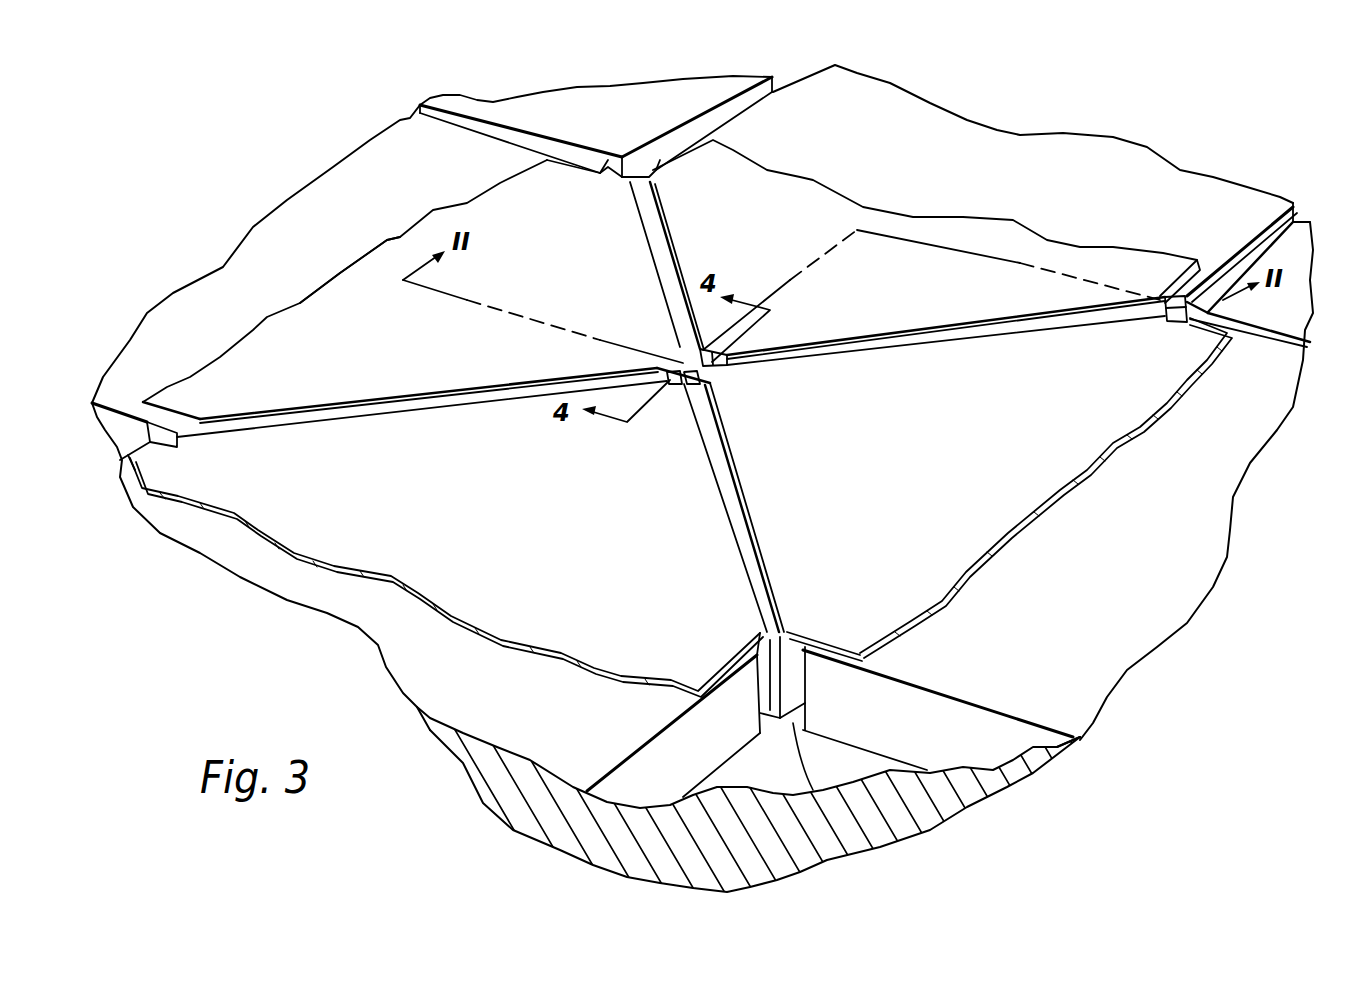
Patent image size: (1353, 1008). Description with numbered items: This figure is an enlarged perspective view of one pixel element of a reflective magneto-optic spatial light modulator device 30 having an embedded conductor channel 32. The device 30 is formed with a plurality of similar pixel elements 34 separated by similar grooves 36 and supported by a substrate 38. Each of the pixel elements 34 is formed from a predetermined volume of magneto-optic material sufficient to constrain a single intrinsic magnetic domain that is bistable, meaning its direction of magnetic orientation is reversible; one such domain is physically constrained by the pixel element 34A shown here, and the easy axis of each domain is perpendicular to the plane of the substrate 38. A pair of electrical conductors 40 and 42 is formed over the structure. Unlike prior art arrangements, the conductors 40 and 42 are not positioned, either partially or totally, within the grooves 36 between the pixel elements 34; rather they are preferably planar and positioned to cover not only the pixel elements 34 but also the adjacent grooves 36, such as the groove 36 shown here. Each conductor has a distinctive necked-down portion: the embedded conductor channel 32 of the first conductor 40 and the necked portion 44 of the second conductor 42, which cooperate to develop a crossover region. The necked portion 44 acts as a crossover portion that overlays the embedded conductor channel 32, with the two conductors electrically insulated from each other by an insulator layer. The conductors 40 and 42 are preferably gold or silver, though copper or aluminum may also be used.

The magneto-optic spatial light modulator device 30 is at (1238, 108).
The embedded conductor channel 32 is at (683, 392).
The pixel elements 34 is at (290, 215).
The pixel element 34A is at (768, 693).
The grooves 36 is at (870, 842).
The substrate 38 is at (970, 793).
The first electrical conductor 40 is at (1138, 270).
The second electrical conductor 42 is at (247, 323).
The necked portion 44 is at (710, 372).